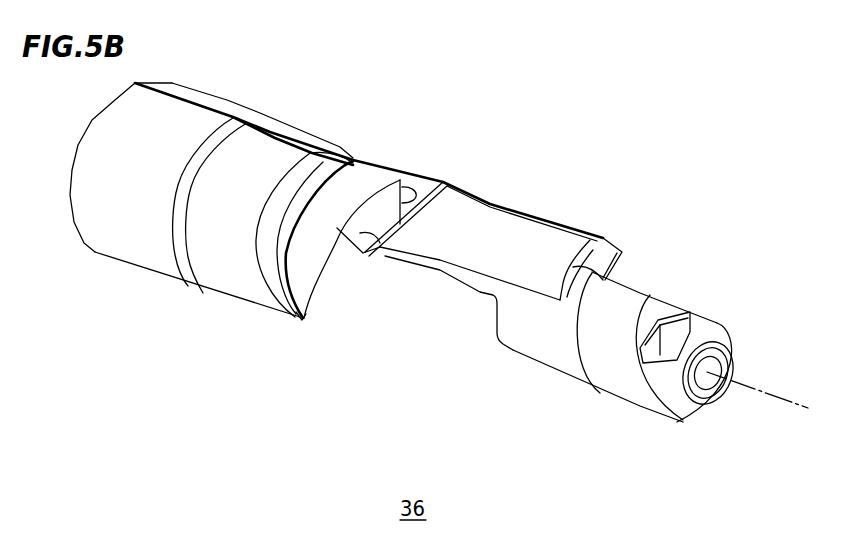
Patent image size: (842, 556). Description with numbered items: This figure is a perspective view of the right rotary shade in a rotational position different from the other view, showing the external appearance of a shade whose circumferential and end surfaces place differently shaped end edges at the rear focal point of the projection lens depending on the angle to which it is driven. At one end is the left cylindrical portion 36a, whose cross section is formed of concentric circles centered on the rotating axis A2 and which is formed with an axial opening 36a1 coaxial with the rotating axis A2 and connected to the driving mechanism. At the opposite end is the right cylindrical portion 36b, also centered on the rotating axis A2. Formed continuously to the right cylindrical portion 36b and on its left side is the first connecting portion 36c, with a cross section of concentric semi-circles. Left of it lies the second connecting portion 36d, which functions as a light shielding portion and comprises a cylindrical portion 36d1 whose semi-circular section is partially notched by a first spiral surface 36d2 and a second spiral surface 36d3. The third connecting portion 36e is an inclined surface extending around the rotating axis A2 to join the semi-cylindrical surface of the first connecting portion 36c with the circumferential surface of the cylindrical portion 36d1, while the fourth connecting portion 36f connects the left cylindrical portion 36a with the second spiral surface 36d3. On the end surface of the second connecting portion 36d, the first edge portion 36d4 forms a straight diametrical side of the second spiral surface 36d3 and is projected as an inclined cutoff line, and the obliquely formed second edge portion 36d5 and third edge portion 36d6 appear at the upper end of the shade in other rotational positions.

The left cylindrical portion 36a is at (610, 367).
The axial opening 36a1 is at (712, 381).
The right cylindrical portion 36b is at (130, 215).
The first connecting portion 36c is at (220, 258).
The second connecting portion 36d is at (350, 194).
The cylindrical portion 36d1 is at (327, 200).
The first spiral surface 36d2 is at (330, 258).
The second spiral surface 36d3 is at (385, 210).
The first edge portion 36d4 is at (419, 190).
The second edge portion 36d5 is at (376, 257).
The third edge portion 36d6 is at (303, 318).
The third connecting portion 36e is at (285, 237).
The fourth connecting portion 36f is at (523, 243).
The rotating axis A2 is at (758, 393).